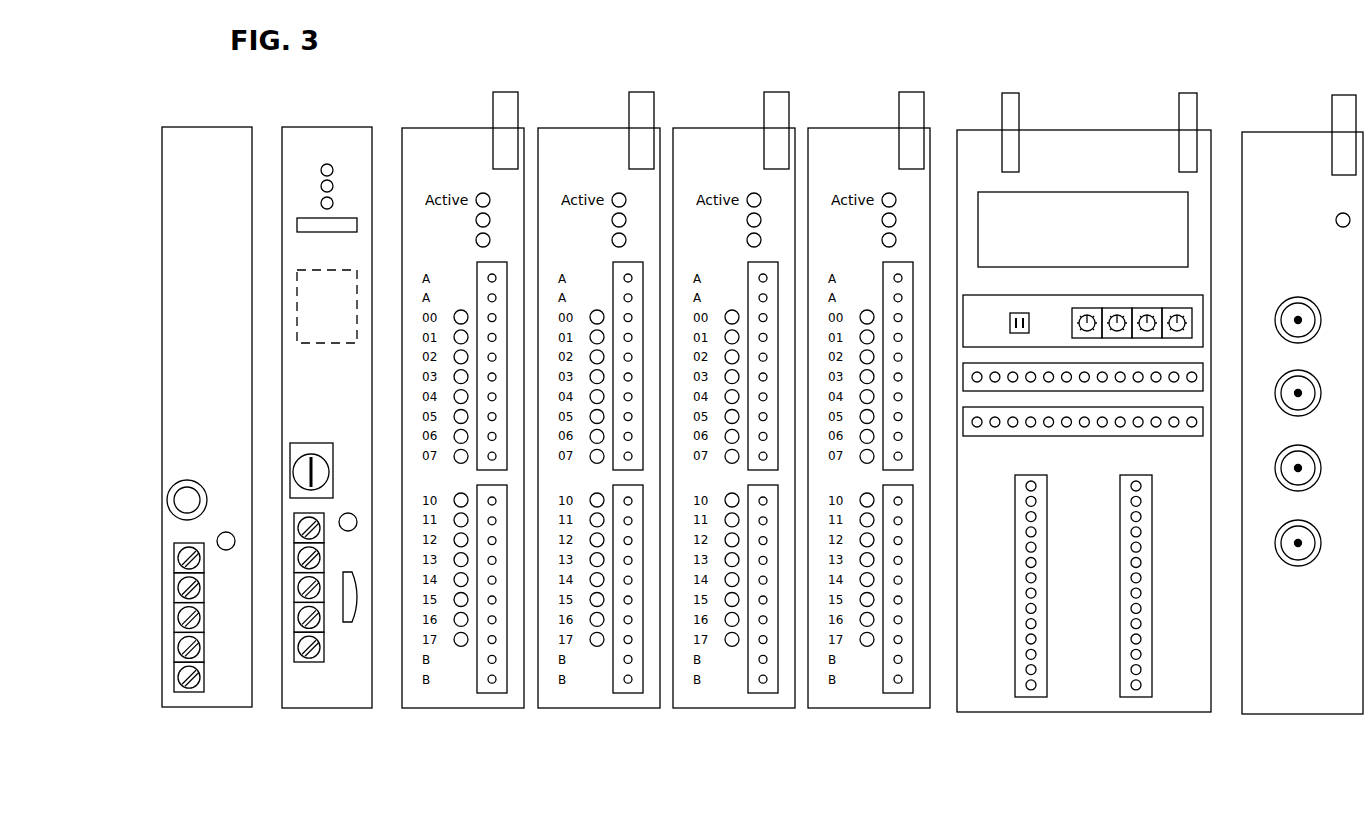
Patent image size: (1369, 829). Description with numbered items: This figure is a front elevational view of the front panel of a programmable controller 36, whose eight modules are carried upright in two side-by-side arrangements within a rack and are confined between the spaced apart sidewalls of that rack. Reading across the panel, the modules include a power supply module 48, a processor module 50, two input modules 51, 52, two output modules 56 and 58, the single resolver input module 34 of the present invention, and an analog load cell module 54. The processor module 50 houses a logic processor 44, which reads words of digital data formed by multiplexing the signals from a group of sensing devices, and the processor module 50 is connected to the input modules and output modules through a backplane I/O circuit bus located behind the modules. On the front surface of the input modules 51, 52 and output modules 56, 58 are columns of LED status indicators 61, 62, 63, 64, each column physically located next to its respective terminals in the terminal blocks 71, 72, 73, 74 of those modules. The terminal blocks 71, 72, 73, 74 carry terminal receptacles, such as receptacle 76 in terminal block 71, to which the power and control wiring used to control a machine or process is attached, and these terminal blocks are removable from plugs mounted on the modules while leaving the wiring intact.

The single resolver input module 34 is at (1087, 690).
The programmable controller 36 is at (1084, 393).
The logic processor 44 is at (327, 306).
The power supply module 48 is at (202, 138).
The processor module 50 is at (327, 393).
The input module 51 is at (451, 423).
The input module 52 is at (599, 426).
The analog load cell module 54 is at (1282, 148).
The output module 56 is at (734, 429).
The output module 58 is at (869, 423).
The column of LED status indicators 61 is at (461, 657).
The column of LED status indicators 62 is at (596, 664).
The column of LED status indicators 63 is at (730, 664).
The column of LED status indicators 64 is at (866, 664).
The terminal block 71 is at (489, 698).
The terminal block 72 is at (625, 698).
The terminal block 73 is at (759, 698).
The terminal block 74 is at (894, 698).
The terminal receptacle 76 is at (490, 314).